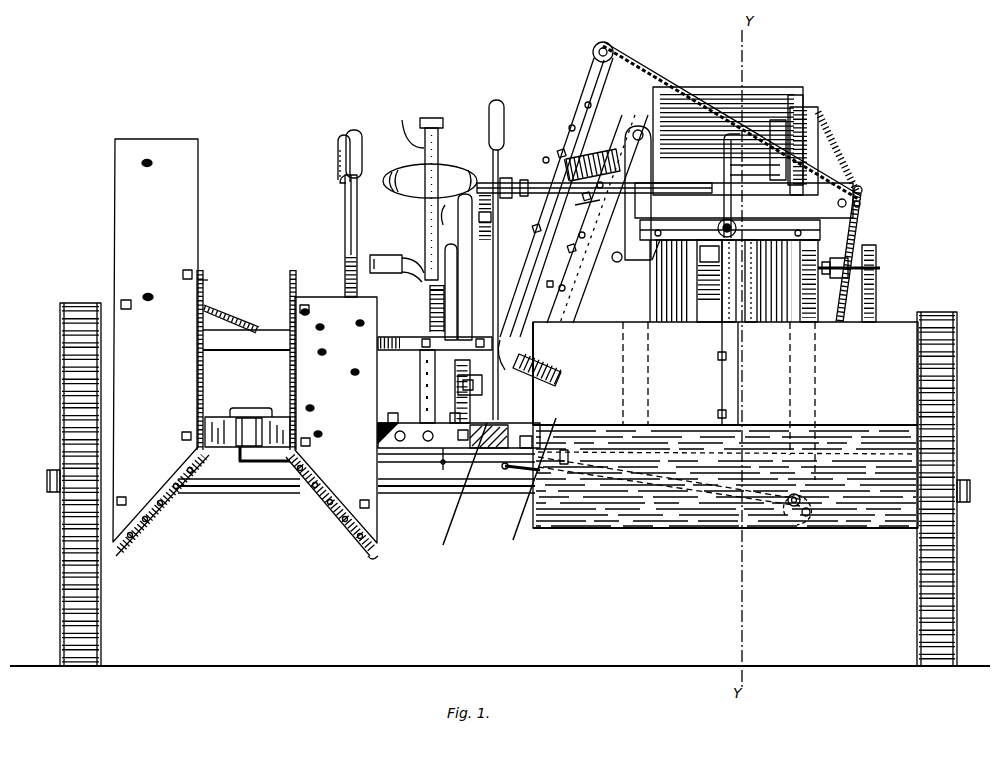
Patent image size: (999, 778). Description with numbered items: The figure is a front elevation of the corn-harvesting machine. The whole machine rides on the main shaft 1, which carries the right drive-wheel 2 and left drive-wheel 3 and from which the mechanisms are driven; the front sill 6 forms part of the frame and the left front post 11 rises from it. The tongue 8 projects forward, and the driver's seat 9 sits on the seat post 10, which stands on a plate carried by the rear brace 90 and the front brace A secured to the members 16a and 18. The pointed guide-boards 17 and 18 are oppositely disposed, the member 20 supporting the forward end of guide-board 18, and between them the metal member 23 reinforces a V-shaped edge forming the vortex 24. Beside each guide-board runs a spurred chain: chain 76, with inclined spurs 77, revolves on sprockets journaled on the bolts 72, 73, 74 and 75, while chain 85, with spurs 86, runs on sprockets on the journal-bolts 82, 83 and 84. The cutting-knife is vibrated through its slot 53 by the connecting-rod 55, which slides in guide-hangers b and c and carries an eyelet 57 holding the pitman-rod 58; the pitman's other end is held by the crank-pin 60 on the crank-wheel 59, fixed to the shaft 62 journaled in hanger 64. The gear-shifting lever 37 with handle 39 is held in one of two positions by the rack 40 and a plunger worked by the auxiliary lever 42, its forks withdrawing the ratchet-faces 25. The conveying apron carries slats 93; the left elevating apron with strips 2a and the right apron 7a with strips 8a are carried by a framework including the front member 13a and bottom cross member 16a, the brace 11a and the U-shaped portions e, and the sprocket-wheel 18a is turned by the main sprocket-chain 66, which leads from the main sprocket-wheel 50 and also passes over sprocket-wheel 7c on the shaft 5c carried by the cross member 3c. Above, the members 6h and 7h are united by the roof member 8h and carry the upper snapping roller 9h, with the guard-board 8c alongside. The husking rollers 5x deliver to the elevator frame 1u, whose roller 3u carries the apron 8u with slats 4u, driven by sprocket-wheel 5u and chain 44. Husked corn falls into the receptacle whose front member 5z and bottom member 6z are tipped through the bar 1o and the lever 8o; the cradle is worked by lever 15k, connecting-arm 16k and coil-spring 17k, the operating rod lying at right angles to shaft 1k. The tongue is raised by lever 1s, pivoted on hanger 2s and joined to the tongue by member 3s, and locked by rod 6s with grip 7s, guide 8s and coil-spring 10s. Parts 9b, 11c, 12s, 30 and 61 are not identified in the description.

The main shaft 1 is at (46, 482).
The right drive-wheel 2 is at (52, 612).
The left drive-wheel 3 is at (958, 635).
The front sill 6 is at (531, 484).
The tongue 8 is at (461, 487).
The driver's seat 9 is at (398, 170).
The knob bracket 9b is at (407, 126).
The seat post 10 is at (424, 210).
The left front post 11 is at (814, 378).
The brace 11a is at (537, 409).
The side column 11c is at (811, 228).
The partition 12s is at (647, 362).
The front member 13a is at (586, 96).
The lever 15k is at (455, 267).
The bottom cross member 16a is at (560, 166).
The connecting-arm 16k is at (448, 246).
The guide-board 17 is at (118, 219).
The coil-spring 17k is at (452, 362).
The guide-board 18 is at (330, 304).
The sprocket-wheel 18a is at (607, 43).
The shaft 1k is at (622, 257).
The bar 1o is at (724, 371).
The lever 1s is at (500, 152).
The frame 1u is at (688, 320).
The slats 2a is at (590, 302).
The hanger 2s is at (539, 290).
The member 20 is at (577, 204).
The metal member 23 is at (212, 417).
The vortex 24 is at (238, 462).
The ratchet-faces 25 is at (262, 462).
The clamp 30 is at (524, 178).
The perpendicular lever 37 is at (345, 236).
The handle 39 is at (356, 137).
The cross member 3c is at (744, 200).
The member 3s is at (500, 350).
The roller 3u is at (709, 279).
The permanent rack 40 is at (730, 222).
The auxiliary lever 42 is at (336, 148).
The sprocket-chain 44 is at (877, 286).
The slats 4u is at (709, 282).
The main sprocket-wheel 50 is at (680, 194).
The slot 53 is at (459, 450).
The connecting-rod 55 is at (590, 461).
The eyelet 57 is at (508, 472).
The pitman-rod 58 is at (638, 485).
The crank-wheel 59 is at (808, 518).
The shaft 5c is at (863, 190).
The sprocket-wheel 5u is at (873, 256).
The rollers 5x is at (652, 296).
The front member 5z is at (884, 334).
The crank-pin 60 is at (734, 206).
The bracket 61 is at (246, 407).
The shaft 62 is at (790, 507).
The hanger 64 is at (812, 496).
The sprocket-chain 66 is at (661, 72).
The member 6h is at (777, 149).
The rod 6s is at (491, 231).
The member 6z is at (888, 530).
The bolt 72 is at (185, 266).
The bolt 73 is at (128, 298).
The bolt 74 is at (123, 494).
The bolt 75 is at (182, 434).
The sprocket-chain 76 is at (166, 510).
The spurs 77 is at (206, 280).
The right apron 7a is at (595, 98).
The sprocket-wheel 7c is at (862, 204).
The member 7h is at (660, 164).
The grip 7s is at (502, 118).
The journal-bolt 82 is at (310, 312).
The journal-bolt 83 is at (357, 496).
The journal-bolt 84 is at (311, 438).
The sprocket-chain 85 is at (335, 530).
The spurs 86 is at (365, 548).
The slats 8a is at (600, 127).
The guard-board 8c is at (810, 110).
The member 8h is at (783, 94).
The lever 8o is at (410, 258).
The guide 8s is at (491, 217).
The endless apron 8u is at (716, 281).
The brace 90 is at (266, 346).
The slats 93 is at (484, 410).
The roller 9h is at (768, 170).
The front brace A is at (400, 351).
The guide-hanger b is at (440, 464).
The guide-hanger c is at (570, 462).
The U-shaped portions e is at (593, 160).
The coil-spring 10s is at (492, 205).